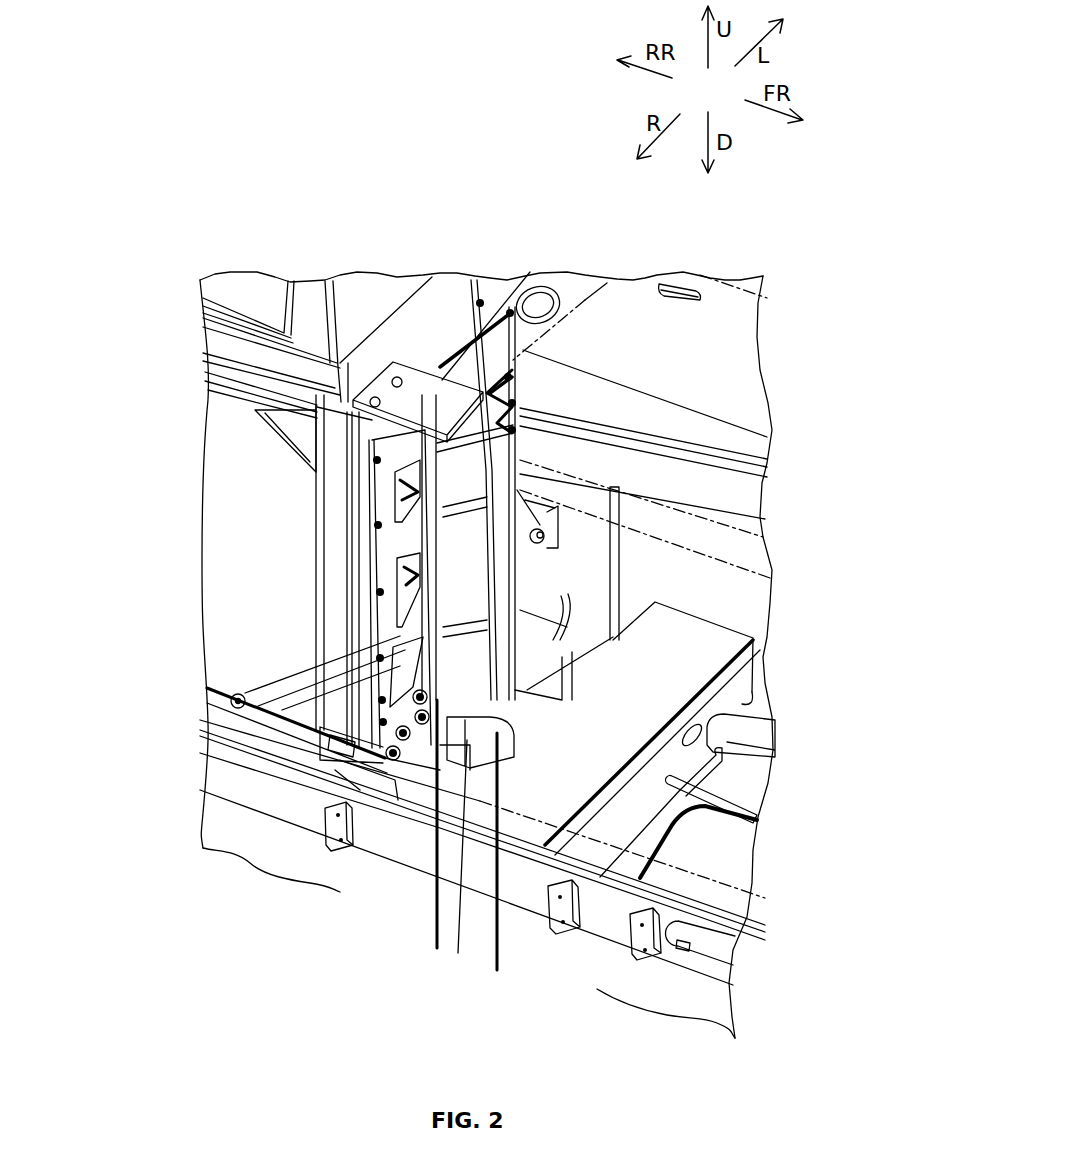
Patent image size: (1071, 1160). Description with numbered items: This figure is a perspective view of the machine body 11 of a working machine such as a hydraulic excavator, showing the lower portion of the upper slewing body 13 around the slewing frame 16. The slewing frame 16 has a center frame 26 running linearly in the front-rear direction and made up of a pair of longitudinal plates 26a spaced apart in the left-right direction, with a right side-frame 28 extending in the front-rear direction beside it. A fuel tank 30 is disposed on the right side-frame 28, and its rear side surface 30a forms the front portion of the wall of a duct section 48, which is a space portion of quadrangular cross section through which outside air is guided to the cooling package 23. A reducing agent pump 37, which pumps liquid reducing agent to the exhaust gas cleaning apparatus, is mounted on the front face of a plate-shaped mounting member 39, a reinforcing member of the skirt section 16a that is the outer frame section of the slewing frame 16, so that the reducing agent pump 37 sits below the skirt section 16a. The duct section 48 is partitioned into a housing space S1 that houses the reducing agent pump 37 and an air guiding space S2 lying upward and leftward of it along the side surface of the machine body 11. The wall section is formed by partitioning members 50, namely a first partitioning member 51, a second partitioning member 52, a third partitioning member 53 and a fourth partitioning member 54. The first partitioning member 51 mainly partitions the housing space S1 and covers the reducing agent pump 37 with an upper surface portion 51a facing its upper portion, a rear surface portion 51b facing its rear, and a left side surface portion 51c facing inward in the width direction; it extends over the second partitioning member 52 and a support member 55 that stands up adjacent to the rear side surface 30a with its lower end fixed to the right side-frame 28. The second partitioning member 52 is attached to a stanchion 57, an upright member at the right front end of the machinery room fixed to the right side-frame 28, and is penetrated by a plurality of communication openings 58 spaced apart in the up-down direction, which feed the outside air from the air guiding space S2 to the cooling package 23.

The machine body 11 is at (269, 292).
The upper slewing body 13 is at (170, 639).
The slewing frame 16 is at (276, 840).
The skirt section 16a is at (235, 793).
The cooling package 23 is at (226, 413).
The center frame 26 is at (713, 432).
The longitudinal plate 26a is at (733, 513).
The right side-frame 28 is at (600, 850).
The fuel tank 30 is at (537, 813).
The rear side surface 30a is at (440, 745).
The reducing agent pump 37 is at (462, 861).
The mounting member 39 is at (417, 772).
The duct section 48 is at (383, 547).
The partitioning member 50 is at (352, 487).
The first partitioning member 51 is at (535, 640).
The upper surface portion 51a is at (517, 622).
The rear surface portion 51b is at (345, 835).
The left side surface portion 51c is at (583, 670).
The second partitioning member 52 is at (395, 618).
The third partitioning member 53 is at (460, 487).
The fourth partitioning member 54 is at (412, 380).
The support member 55 is at (517, 706).
The stanchion 57 is at (330, 451).
The communication opening 58 is at (397, 495).
The housing space S1 is at (533, 725).
The air guiding space S2 is at (328, 748).